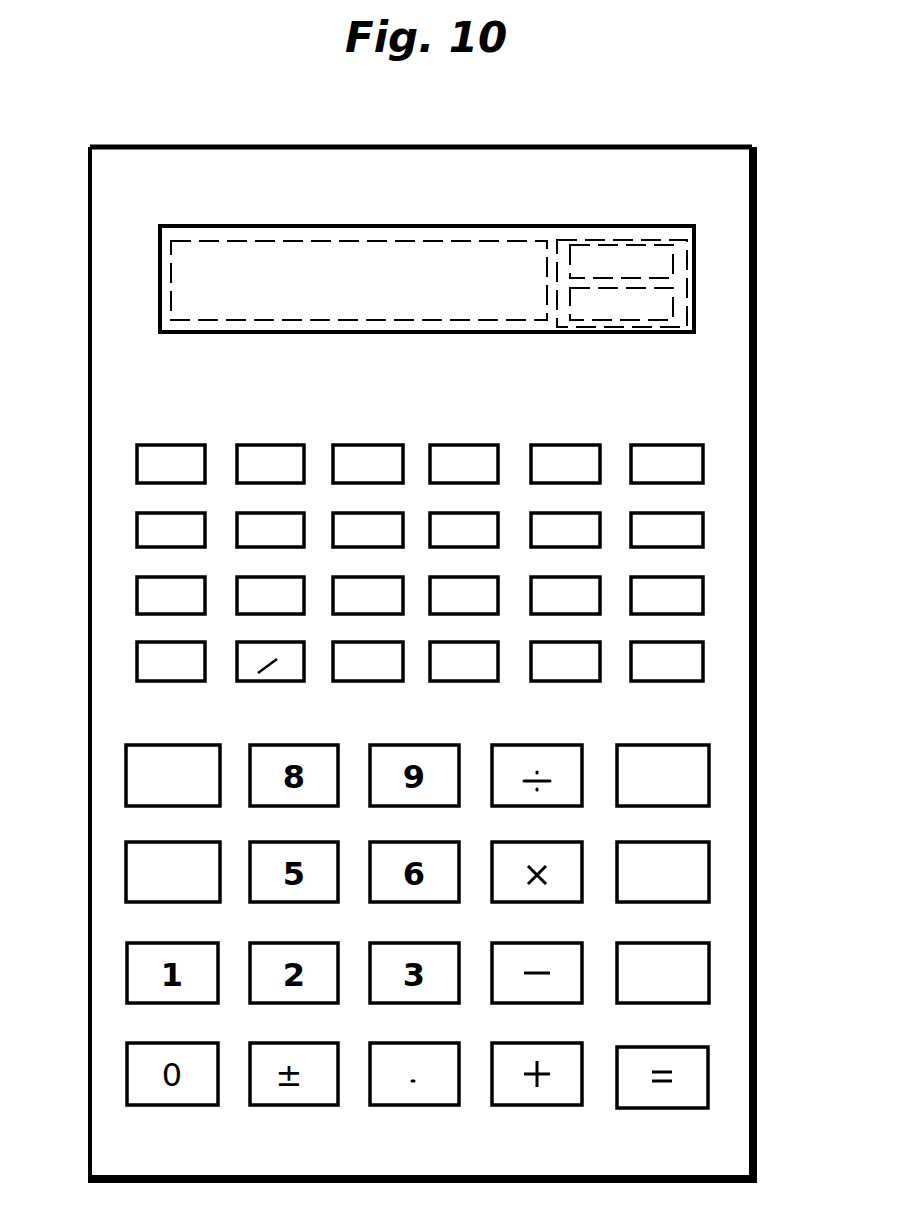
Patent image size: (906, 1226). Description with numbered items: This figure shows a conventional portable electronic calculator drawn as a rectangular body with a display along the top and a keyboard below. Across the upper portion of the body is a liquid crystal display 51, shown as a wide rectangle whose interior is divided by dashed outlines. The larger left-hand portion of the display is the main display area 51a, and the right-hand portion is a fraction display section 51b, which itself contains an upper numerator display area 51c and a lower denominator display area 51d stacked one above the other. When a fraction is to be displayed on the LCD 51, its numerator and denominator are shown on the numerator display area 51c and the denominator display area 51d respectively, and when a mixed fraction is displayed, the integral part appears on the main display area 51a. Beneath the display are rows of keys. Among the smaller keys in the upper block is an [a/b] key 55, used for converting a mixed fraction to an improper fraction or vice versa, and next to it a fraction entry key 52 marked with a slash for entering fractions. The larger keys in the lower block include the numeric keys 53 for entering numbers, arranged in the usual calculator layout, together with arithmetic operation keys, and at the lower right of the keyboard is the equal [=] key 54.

The liquid crystal display 51 is at (160, 242).
The main display area 51a is at (171, 309).
The fraction display section 51b is at (645, 240).
The numerator display area 51c is at (673, 268).
The denominator display area 51d is at (673, 312).
The fraction entry key 52 is at (237, 680).
The numeric keys 53 is at (126, 778).
The equal key 54 is at (708, 1080).
The a/b key 55 is at (137, 653).